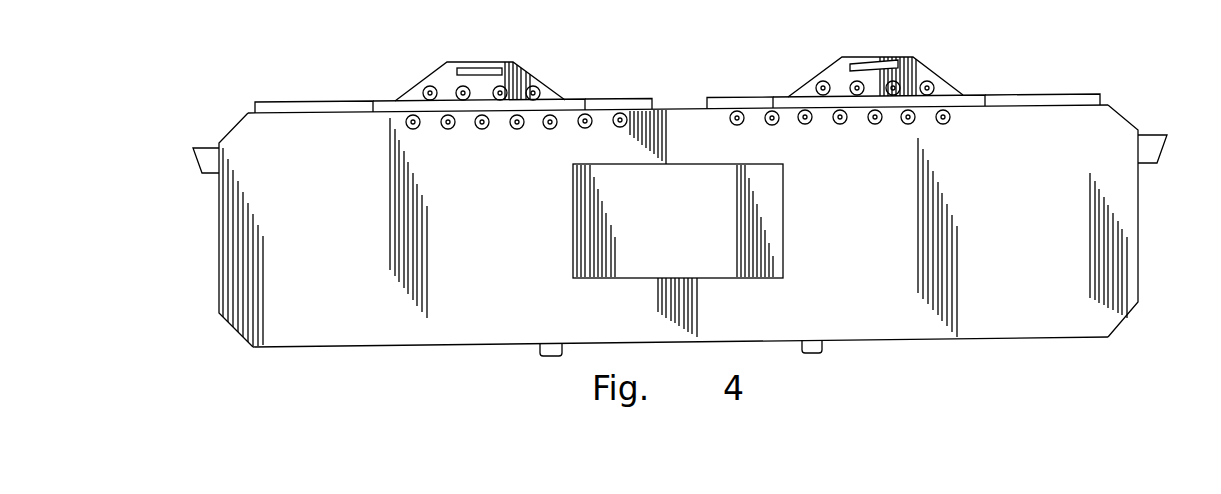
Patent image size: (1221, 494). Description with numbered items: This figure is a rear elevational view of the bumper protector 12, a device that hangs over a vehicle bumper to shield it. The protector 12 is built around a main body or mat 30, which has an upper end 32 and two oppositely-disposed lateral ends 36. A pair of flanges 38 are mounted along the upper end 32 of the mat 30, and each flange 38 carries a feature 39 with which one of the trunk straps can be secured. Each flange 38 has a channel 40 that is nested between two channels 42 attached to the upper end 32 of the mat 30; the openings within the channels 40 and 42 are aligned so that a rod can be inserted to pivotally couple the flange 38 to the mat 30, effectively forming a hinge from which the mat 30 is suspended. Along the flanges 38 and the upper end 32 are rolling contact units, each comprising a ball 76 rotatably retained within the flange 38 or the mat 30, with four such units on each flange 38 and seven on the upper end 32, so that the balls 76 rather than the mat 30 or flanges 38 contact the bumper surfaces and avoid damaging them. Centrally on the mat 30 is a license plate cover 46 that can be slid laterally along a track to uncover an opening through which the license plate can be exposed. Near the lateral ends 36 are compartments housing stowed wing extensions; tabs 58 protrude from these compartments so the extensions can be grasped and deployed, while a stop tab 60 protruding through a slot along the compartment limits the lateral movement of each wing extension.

The bumper protector 12 is at (240, 64).
The mat 30 is at (1028, 319).
The upper end 32 is at (665, 109).
The lateral ends 36 is at (219, 232).
The flanges 38 is at (437, 77).
The feature 39 is at (482, 72).
The channel 40 is at (552, 107).
The channels 42 is at (330, 107).
The license plate cover 46 is at (713, 270).
The tabs 58 is at (202, 157).
The stop tab 60 is at (552, 356).
The ball 76 is at (463, 100).